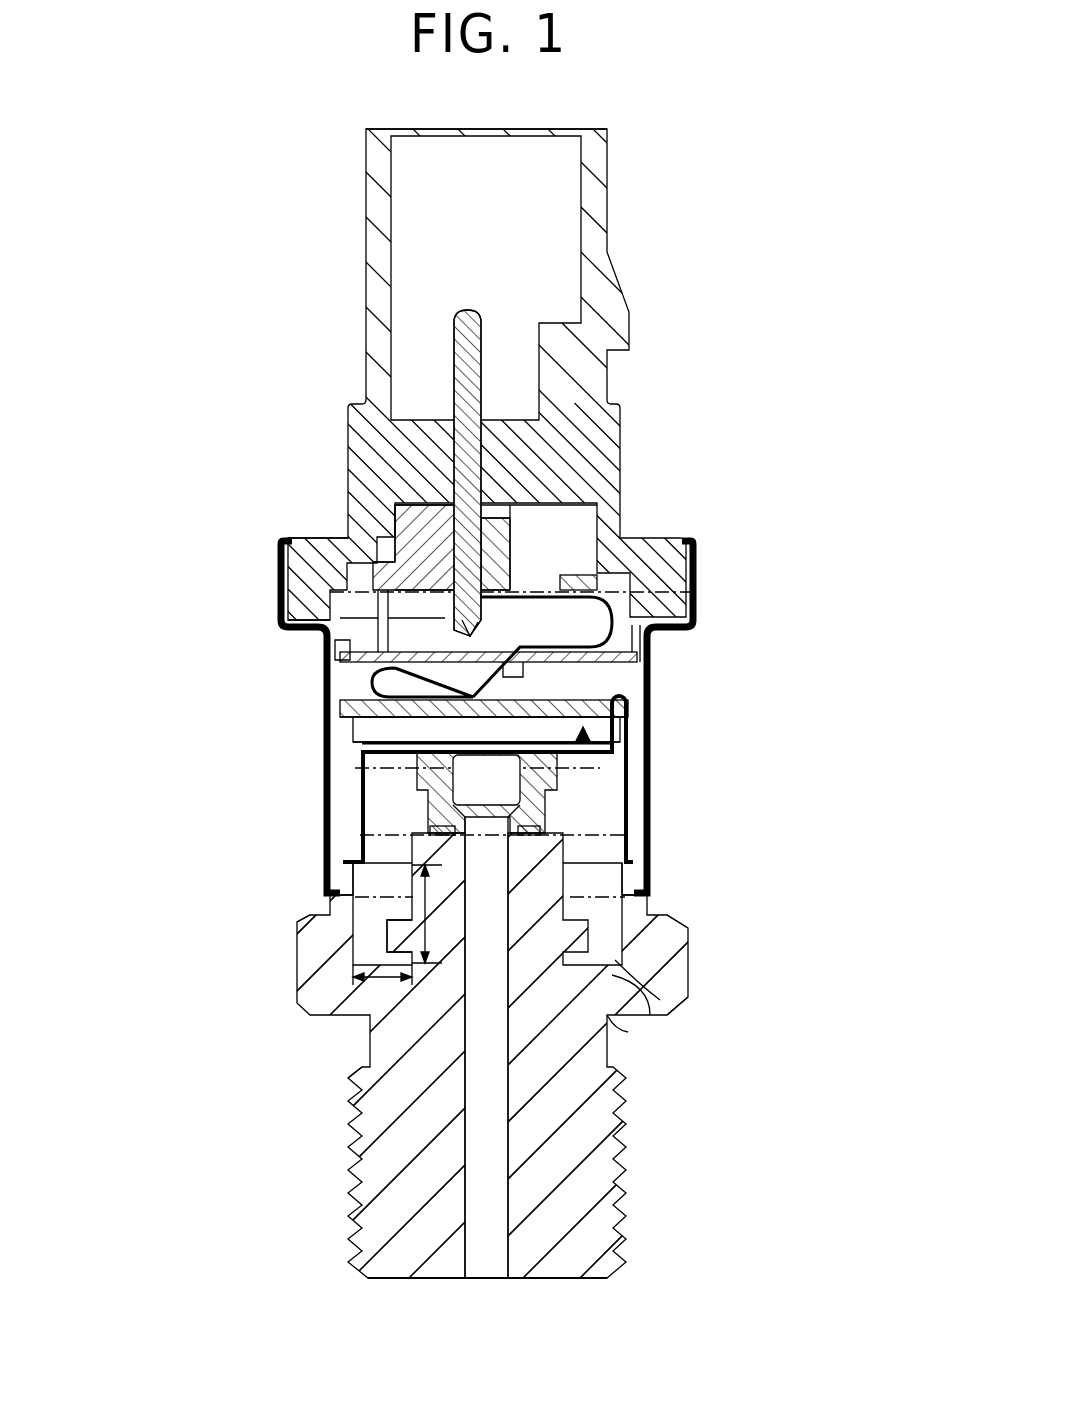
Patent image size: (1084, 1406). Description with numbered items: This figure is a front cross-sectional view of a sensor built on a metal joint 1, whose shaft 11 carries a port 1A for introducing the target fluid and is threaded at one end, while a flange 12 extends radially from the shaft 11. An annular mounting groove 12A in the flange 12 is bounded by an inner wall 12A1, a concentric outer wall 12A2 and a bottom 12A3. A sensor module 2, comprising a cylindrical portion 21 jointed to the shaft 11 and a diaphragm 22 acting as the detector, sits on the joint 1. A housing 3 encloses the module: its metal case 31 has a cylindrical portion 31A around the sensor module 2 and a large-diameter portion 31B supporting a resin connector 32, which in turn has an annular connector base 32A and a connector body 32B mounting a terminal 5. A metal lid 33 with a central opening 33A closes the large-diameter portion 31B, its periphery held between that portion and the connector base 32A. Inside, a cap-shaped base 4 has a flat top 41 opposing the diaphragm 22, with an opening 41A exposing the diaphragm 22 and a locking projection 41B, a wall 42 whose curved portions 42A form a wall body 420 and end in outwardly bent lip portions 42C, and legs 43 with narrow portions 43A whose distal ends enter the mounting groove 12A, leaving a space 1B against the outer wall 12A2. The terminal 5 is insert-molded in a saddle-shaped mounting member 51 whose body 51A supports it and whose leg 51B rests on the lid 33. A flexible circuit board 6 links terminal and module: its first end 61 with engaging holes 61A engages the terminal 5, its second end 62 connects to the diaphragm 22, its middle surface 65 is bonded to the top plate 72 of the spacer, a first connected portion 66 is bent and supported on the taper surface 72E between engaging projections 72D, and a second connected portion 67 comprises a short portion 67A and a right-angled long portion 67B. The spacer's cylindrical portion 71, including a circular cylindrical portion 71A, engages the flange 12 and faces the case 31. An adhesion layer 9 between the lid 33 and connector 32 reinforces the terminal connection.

The joint 1 is at (264, 1048).
The shaft 11 is at (378, 1100).
The flange 12 is at (367, 1006).
The mounting groove 12A is at (784, 1018).
The inner wall 12A1 is at (607, 1023).
The outer wall 12A2 is at (688, 998).
The bottom 12A3 is at (630, 1017).
The port 1A is at (488, 1252).
The space 1B is at (602, 920).
The sensor module 2 is at (145, 748).
The cylindrical portion 21 is at (348, 775).
The diaphragm 22 is at (352, 750).
The housing 3 is at (809, 640).
The case 31 is at (648, 702).
The cylindrical portion 31A is at (322, 675).
The large-diameter portion 31B is at (280, 590).
The connector 32 is at (700, 628).
The connector base 32A is at (298, 573).
The connector body 32B is at (362, 430).
The lid 33 is at (318, 637).
The opening 33A is at (517, 687).
The base 4 is at (640, 767).
The top 41 is at (410, 748).
The opening 41A is at (605, 735).
The locking projection 41B is at (610, 745).
The wall 42 is at (560, 818).
The wall body 420 is at (560, 800).
The curved portions 42A is at (560, 848).
The lip portions 42C is at (640, 866).
The legs 43 is at (372, 958).
The narrow portion 43A is at (393, 938).
The terminal 5 is at (470, 332).
The mounting member 51 is at (219, 440).
The body 51A is at (407, 537).
The leg 51B is at (385, 600).
The flexible circuit board 6 is at (614, 604).
The first end 61 is at (572, 600).
The engaging holes 61A is at (483, 610).
The second end 62 is at (470, 770).
The middle surface 65 is at (650, 682).
The first connected portion 66 is at (537, 653).
The second connected portion 67 is at (362, 822).
The short portion 67A is at (620, 795).
The long portion 67B is at (358, 852).
The cylindrical portion 71 is at (342, 708).
The circular cylindrical portion 71A is at (345, 798).
The top plate 72 is at (372, 680).
The engaging projections 72D is at (500, 670).
The taper surface 72E is at (477, 670).
The adhesion layer 9 is at (603, 587).